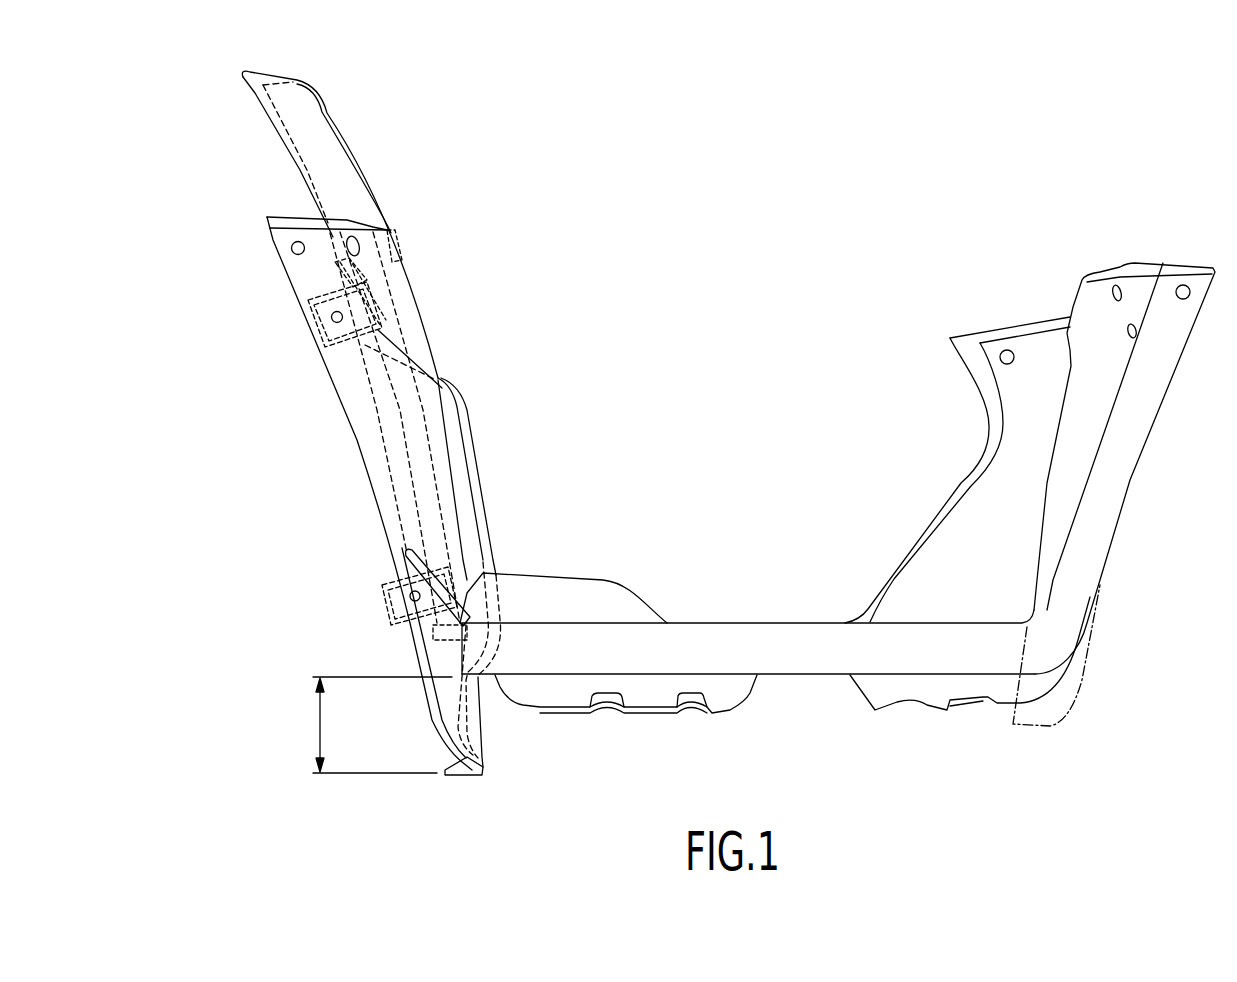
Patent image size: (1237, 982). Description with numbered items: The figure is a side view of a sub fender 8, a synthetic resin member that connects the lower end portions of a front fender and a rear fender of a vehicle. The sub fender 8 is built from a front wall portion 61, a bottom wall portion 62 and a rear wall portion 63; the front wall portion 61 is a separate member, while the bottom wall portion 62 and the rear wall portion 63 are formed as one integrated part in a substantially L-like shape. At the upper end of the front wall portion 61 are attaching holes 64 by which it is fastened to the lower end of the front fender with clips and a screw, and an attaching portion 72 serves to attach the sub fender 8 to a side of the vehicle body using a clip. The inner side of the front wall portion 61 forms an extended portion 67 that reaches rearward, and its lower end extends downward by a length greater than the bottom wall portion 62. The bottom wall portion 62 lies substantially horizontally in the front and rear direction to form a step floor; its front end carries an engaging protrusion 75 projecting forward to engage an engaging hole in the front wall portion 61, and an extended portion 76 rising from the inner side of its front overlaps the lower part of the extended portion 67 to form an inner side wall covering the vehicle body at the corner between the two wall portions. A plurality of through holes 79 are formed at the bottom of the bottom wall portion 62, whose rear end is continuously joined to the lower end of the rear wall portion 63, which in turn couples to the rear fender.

The sub fender 8 is at (737, 402).
The front wall portion 61 is at (362, 422).
The bottom wall portion 62 is at (753, 627).
The rear wall portion 63 is at (1123, 450).
The attaching holes 64 is at (298, 254).
The extended portion 67 is at (472, 498).
The attaching portion 72 is at (327, 333).
The engaging protrusion 75 is at (432, 632).
The extended portion 76 is at (587, 580).
The through holes 79 is at (563, 714).